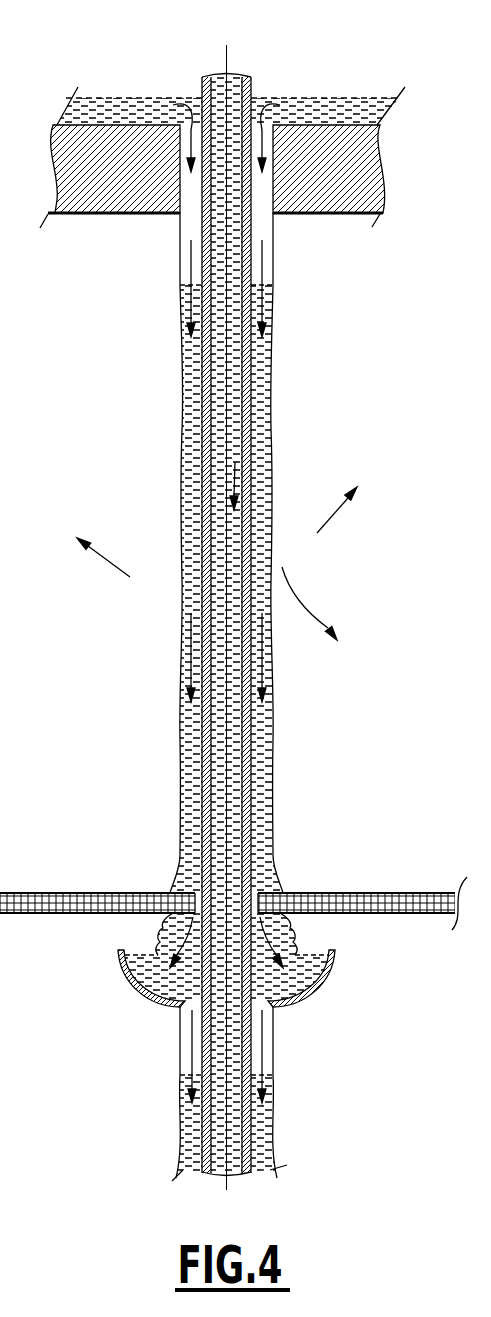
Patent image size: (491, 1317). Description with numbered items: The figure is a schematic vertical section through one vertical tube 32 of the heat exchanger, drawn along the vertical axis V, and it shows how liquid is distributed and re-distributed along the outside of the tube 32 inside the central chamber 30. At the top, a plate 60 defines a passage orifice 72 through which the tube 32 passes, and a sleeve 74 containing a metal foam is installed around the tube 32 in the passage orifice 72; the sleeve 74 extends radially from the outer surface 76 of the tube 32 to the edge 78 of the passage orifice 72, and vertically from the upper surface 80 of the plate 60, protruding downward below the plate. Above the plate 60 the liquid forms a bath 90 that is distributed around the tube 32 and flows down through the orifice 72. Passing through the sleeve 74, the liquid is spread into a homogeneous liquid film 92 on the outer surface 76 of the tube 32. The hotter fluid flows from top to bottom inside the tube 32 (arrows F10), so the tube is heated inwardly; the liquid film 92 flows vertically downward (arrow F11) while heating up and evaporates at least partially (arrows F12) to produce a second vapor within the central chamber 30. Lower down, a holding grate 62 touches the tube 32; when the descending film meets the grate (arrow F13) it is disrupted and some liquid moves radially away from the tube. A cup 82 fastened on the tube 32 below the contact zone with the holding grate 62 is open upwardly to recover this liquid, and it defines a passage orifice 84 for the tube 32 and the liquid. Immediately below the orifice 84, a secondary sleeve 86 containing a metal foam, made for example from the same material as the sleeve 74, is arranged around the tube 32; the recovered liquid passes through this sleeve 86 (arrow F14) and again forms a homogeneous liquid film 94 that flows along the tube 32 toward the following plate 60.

The central chamber 30 is at (67, 490).
The tube 32 is at (252, 90).
The plate 60 is at (332, 192).
The holding grate 62 is at (268, 905).
The passage orifice 72 is at (158, 240).
The sleeve 74 is at (262, 240).
The outer surface 76 is at (267, 404).
The edge 78 is at (256, 201).
The upper surface 80 is at (345, 110).
The cup 82 is at (328, 973).
The passage orifice 84 is at (177, 1017).
The secondary sleeve 86 is at (268, 1027).
The liquid bath 90 is at (93, 115).
The liquid film 92 is at (193, 402).
The liquid film 94 is at (257, 1150).
The vertical axis V is at (225, 62).
The arrows F10 is at (237, 462).
The arrow F11 is at (265, 290).
The arrows F12 is at (280, 518).
The arrow F13 is at (255, 883).
The arrow F14 is at (260, 1062).